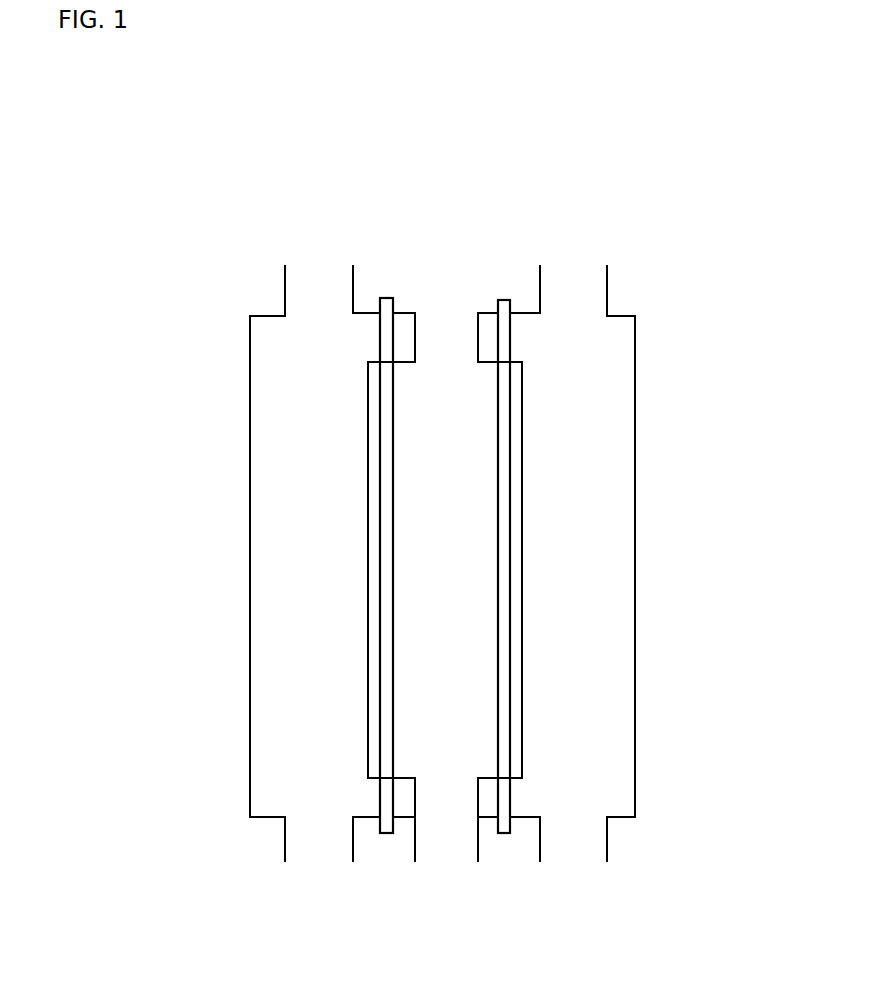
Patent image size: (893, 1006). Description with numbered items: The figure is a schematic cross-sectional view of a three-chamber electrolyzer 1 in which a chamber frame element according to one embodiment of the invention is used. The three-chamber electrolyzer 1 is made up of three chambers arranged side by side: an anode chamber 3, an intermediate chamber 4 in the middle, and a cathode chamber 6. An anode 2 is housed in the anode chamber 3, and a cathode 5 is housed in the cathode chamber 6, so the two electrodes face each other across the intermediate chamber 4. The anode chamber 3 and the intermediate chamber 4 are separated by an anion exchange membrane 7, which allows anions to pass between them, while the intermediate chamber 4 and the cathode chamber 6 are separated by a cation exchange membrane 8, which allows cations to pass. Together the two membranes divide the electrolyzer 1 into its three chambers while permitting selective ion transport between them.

The three-chamber electrolyzer 1 is at (641, 185).
The anode 2 is at (375, 476).
The anode chamber 3 is at (310, 543).
The intermediate chamber 4 is at (440, 430).
The cathode 5 is at (515, 455).
The cathode chamber 6 is at (570, 565).
The anion exchange membrane 7 is at (387, 657).
The cation exchange membrane 8 is at (503, 688).